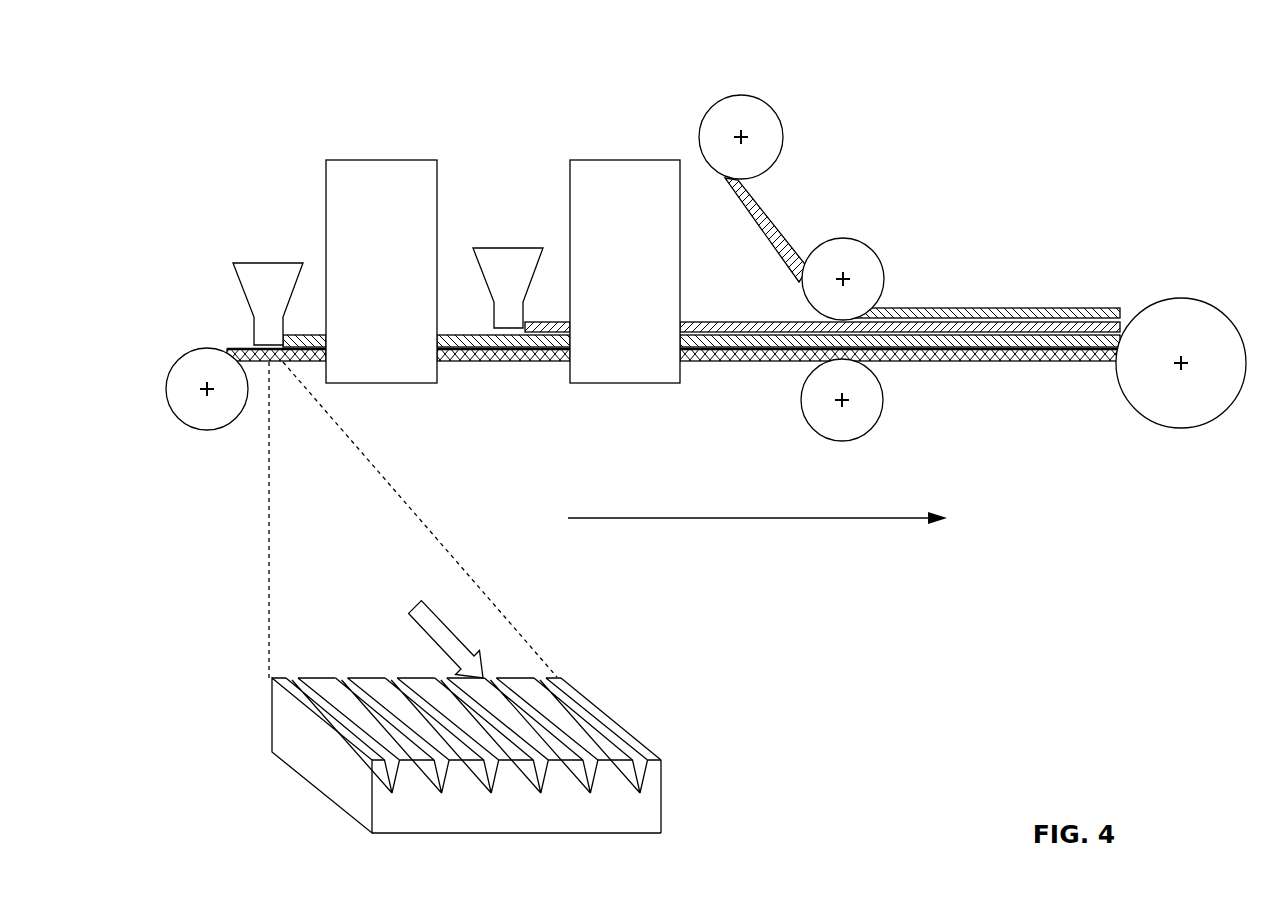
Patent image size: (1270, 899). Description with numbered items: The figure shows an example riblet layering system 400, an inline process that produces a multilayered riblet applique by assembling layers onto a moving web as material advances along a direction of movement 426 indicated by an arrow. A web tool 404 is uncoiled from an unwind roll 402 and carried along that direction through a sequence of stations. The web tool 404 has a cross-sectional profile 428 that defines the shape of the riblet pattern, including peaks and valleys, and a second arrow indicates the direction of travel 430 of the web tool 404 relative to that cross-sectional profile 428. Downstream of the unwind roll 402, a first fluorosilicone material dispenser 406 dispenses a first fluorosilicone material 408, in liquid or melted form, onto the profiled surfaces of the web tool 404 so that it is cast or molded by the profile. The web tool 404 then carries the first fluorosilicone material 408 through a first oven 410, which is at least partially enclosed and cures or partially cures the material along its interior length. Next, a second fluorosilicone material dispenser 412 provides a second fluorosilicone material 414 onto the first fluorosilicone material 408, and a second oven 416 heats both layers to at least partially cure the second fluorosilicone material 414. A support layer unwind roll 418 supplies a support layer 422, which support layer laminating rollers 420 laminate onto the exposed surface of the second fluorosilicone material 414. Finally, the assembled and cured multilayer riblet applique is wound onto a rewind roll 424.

The riblet layering system 400 is at (306, 60).
The unwind roll 402 is at (200, 348).
The web tool 404 is at (282, 363).
The first fluorosilicone material dispenser 406 is at (271, 263).
The first fluorosilicone material 408 is at (320, 334).
The first oven 410 is at (380, 160).
The second fluorosilicone material dispenser 412 is at (510, 248).
The second fluorosilicone material 414 is at (560, 332).
The second oven 416 is at (625, 160).
The support layer unwind roll 418 is at (740, 95).
The support layer laminating rollers 420 is at (880, 258).
The support layer 422 is at (762, 230).
The rewind roll 424 is at (1180, 298).
The direction of movement 426 is at (913, 520).
The cross-sectional profile 428 is at (662, 810).
The direction of travel 430 is at (427, 632).